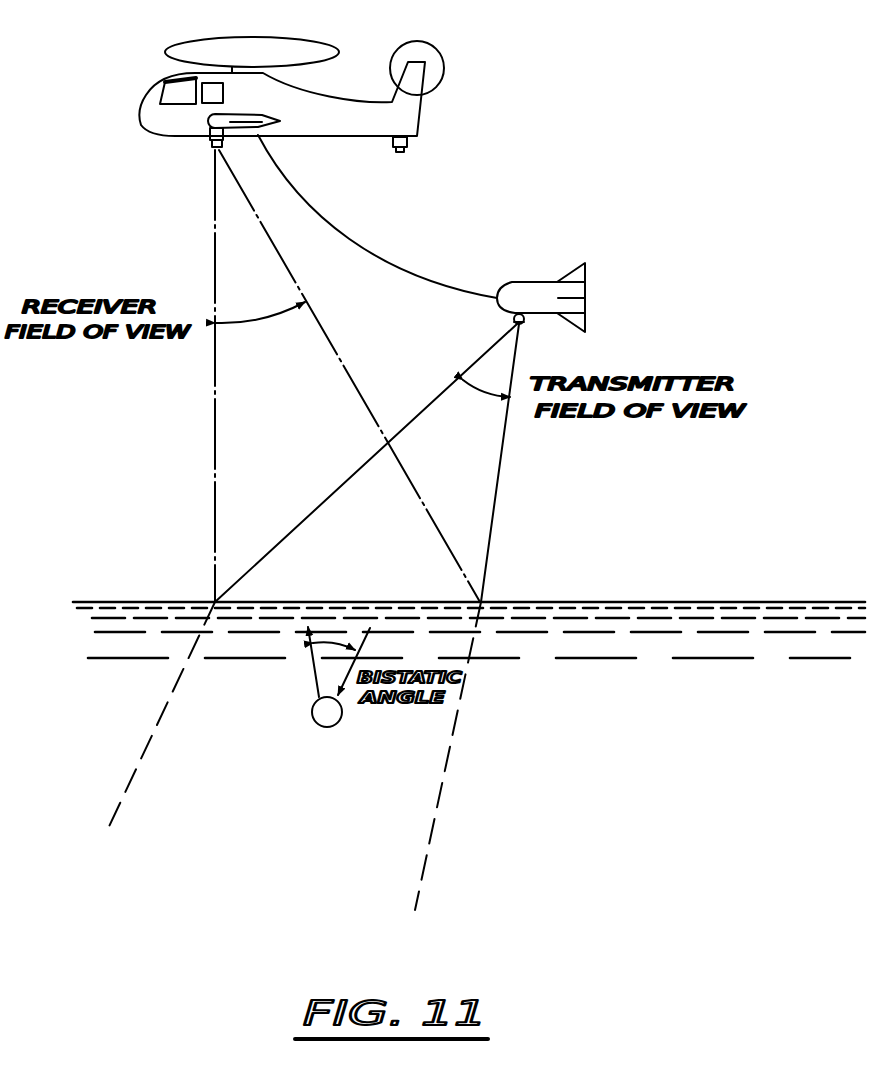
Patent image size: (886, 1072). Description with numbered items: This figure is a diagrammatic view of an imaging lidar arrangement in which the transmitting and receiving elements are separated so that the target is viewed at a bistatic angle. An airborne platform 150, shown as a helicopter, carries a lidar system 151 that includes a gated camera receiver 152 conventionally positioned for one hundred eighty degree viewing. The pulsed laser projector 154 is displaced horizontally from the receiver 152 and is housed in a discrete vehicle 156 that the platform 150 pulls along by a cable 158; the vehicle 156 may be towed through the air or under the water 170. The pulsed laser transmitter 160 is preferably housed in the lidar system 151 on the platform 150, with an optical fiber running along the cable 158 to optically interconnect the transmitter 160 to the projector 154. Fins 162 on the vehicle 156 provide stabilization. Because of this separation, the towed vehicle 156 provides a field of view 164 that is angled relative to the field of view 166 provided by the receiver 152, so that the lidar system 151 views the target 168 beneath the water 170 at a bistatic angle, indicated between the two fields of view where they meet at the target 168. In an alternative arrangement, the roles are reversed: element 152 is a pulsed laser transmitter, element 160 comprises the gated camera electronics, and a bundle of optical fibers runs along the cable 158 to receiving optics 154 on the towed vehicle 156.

The airborne platform 150 is at (303, 136).
The lidar system 151 is at (235, 112).
The gated camera receiver 152 is at (207, 140).
The pulsed laser projector 154 is at (513, 313).
The discrete vehicle 156 is at (585, 300).
The cable 158 is at (398, 252).
The pulsed laser transmitter 160 is at (236, 121).
The fins 162 is at (585, 277).
The field of view 164 is at (498, 498).
The field of view 166 is at (214, 438).
The target 168 is at (318, 722).
The water 170 is at (698, 602).